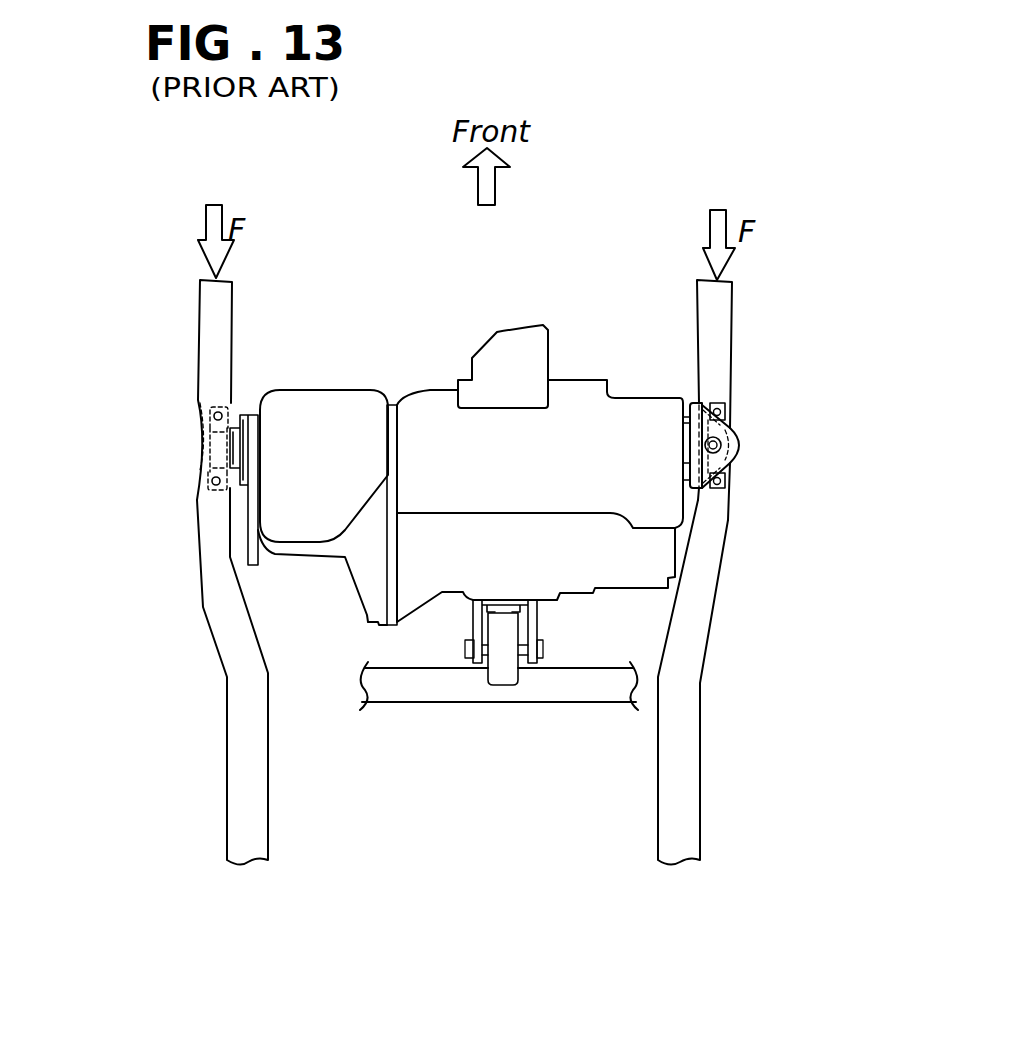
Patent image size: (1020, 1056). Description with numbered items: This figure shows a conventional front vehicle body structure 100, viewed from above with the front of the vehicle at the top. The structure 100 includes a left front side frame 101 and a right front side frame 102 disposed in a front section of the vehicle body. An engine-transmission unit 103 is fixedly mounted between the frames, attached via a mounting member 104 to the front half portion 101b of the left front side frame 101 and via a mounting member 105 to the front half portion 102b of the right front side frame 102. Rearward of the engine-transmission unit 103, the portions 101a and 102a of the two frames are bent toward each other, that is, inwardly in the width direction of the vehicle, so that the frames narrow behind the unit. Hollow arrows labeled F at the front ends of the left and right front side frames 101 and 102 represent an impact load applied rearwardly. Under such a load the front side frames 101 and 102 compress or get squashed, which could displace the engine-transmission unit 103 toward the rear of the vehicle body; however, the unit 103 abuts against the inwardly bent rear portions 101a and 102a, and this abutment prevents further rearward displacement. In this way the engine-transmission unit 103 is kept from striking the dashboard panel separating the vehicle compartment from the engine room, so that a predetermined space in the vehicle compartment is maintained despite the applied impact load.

The front vehicle body structure 100 is at (679, 205).
The left front side frame 101 is at (189, 299).
The rear portion of left front side frame 101a is at (222, 618).
The front half portion of left front side frame 101b is at (207, 385).
The right front side frame 102 is at (748, 303).
The rear portion of right front side frame 102a is at (700, 625).
The front half portion of right front side frame 102b is at (723, 383).
The engine-transmission unit 103 is at (425, 393).
The mounting member 104 is at (210, 450).
The mounting member 105 is at (740, 440).